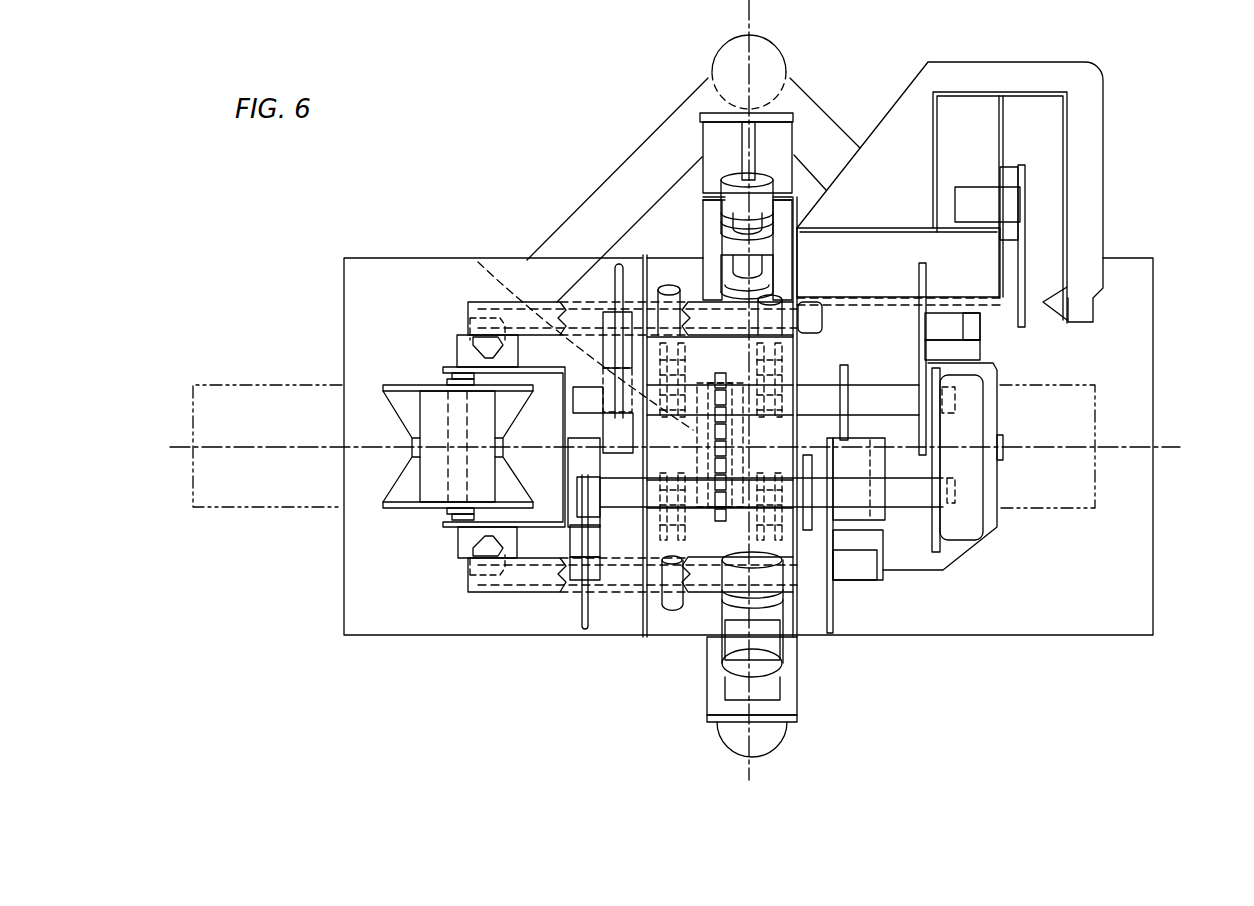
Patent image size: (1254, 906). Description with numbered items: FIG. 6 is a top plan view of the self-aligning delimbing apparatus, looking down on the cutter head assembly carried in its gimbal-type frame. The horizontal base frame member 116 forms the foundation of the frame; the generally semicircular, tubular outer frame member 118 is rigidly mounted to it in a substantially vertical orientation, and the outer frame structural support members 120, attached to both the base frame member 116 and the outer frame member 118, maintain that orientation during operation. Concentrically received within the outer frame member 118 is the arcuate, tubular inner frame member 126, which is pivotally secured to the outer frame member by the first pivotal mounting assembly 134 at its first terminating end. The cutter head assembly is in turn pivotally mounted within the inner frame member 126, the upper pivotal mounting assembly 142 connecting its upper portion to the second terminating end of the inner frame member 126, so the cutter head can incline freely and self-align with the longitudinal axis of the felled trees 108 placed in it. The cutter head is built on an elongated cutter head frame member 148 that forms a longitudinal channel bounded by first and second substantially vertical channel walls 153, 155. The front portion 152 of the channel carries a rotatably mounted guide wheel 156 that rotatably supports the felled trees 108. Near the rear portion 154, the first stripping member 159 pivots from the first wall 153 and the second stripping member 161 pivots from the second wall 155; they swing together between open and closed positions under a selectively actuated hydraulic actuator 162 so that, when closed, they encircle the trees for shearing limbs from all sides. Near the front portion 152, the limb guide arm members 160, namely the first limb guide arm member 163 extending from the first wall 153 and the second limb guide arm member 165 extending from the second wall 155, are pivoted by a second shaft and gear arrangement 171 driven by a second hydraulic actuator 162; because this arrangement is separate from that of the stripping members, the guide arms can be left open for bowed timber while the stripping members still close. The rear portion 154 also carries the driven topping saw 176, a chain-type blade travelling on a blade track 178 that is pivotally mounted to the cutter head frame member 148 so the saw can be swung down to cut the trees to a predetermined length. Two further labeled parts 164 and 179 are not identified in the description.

The felled trees 108 is at (243, 400).
The horizontal base frame member 116 is at (370, 625).
The outer frame member 118 is at (788, 75).
The outer frame structural support members 120 is at (650, 165).
The inner frame member 126 is at (727, 735).
The first pivotal mounting assembly 134 is at (735, 185).
The upper pivotal mounting assembly 142 is at (730, 663).
The cutter head frame member 148 is at (477, 300).
The front portion 152 is at (607, 335).
The first channel wall 153 is at (793, 545).
The rear portion 154 is at (808, 292).
The second channel wall 155 is at (838, 362).
The guide wheel 156 is at (403, 505).
The first stripping member 159 is at (838, 593).
The limb guide arm members 160 is at (600, 600).
The second stripping member 161 is at (963, 350).
The hydraulic actuator 162 is at (669, 288).
The first limb guide arm member 163 is at (583, 600).
The motor 164 is at (908, 493).
The second limb guide arm member 165 is at (620, 340).
The second shaft and gear arrangement 171 is at (883, 400).
The topping saw 176 is at (1025, 260).
The blade track 178 is at (1067, 157).
The pin 179 is at (572, 329).